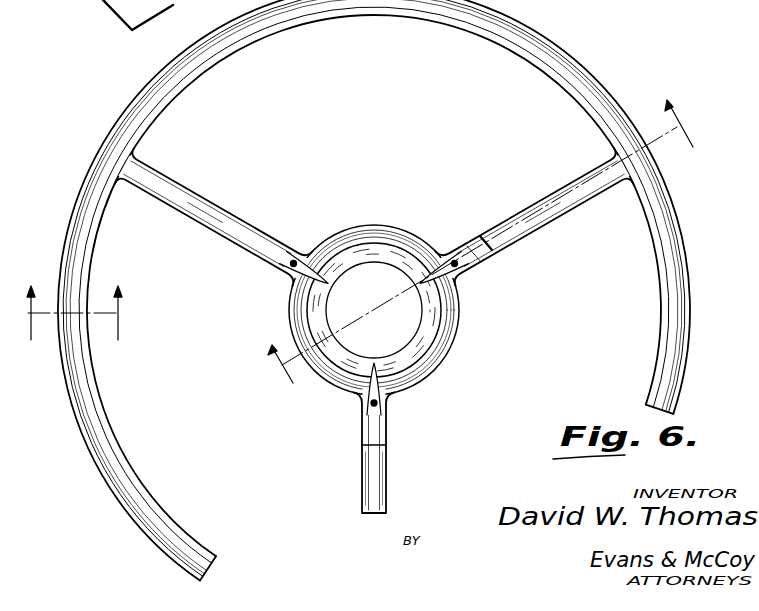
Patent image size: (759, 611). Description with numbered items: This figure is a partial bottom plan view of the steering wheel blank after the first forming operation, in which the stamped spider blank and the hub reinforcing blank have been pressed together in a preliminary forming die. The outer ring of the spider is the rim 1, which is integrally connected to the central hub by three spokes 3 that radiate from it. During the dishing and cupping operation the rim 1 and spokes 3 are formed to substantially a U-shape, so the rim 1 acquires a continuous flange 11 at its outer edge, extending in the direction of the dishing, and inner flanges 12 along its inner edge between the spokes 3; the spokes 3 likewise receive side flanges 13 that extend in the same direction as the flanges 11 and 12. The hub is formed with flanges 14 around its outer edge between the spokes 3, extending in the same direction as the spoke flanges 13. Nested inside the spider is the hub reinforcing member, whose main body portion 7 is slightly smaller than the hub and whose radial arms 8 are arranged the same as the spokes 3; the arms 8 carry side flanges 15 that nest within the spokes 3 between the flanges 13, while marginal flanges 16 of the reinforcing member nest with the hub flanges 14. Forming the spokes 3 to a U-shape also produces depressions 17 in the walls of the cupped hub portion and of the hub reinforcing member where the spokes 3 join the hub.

The rim 1 is at (374, 290).
The continuous flange 11 is at (598, 83).
The inner flanges 12 is at (580, 104).
The spokes 3 is at (527, 219).
The side flanges 13 is at (558, 213).
The radial arms 8 is at (483, 210).
The side flanges 15 is at (481, 262).
The flanges 14 is at (374, 291).
The marginal flanges 16 is at (348, 230).
The main body portion 7 is at (487, 259).
The depressions 17 is at (402, 380).